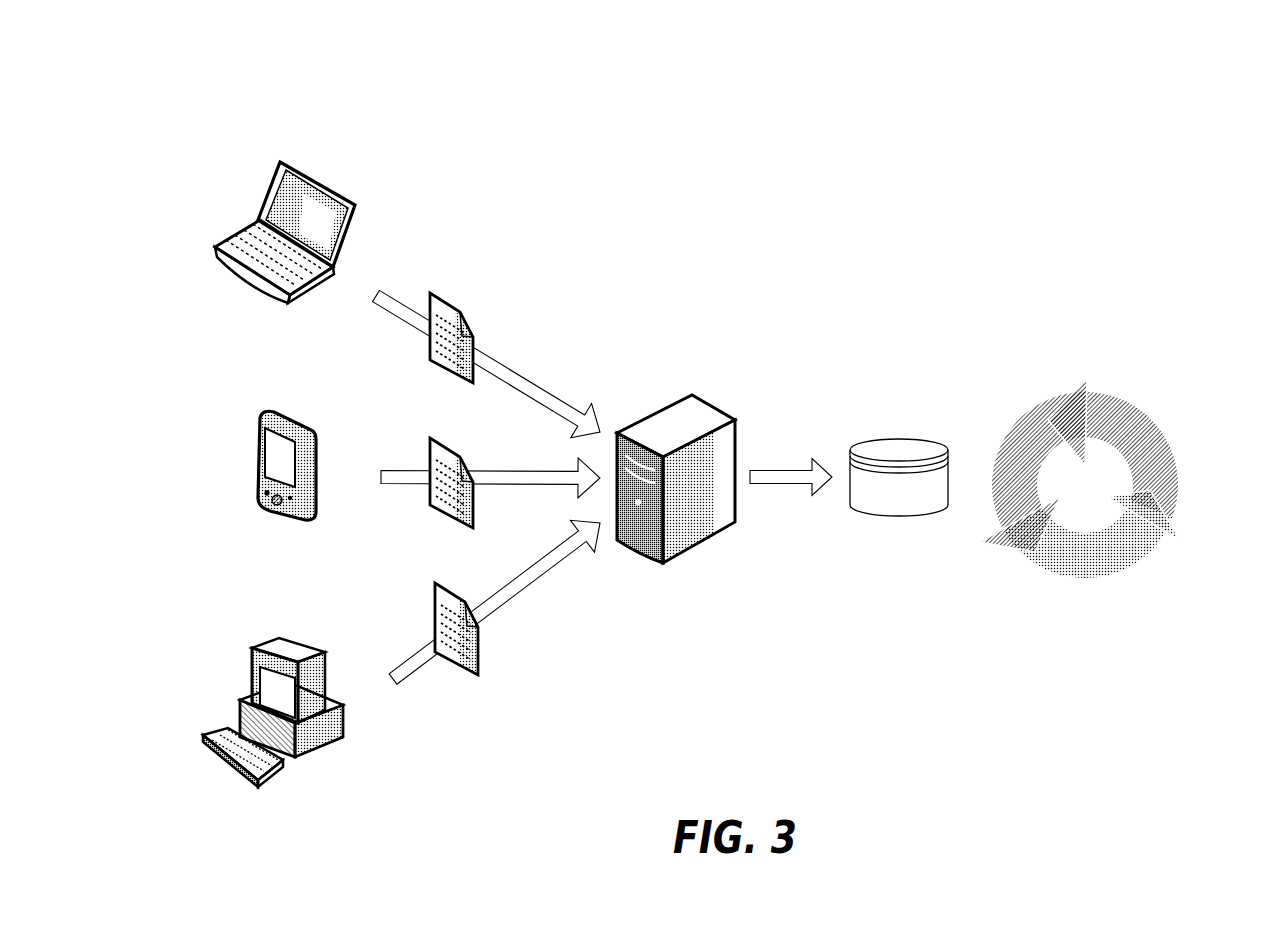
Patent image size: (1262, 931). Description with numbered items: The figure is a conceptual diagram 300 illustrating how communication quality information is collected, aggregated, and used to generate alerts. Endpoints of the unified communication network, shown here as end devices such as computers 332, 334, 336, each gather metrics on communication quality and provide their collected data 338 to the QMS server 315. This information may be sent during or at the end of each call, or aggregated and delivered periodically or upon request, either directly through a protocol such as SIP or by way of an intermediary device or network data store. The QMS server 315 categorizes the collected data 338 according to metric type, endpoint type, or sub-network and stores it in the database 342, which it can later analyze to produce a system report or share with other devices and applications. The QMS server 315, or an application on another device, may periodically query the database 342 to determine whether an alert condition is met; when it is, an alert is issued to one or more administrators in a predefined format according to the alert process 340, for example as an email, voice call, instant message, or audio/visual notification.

The conceptual diagram 300 is at (1095, 92).
The computer 332 is at (285, 155).
The computer 334 is at (282, 405).
The computer 336 is at (283, 637).
The collected data 338 is at (453, 280).
The QMS server 315 is at (677, 378).
The database 342 is at (895, 413).
The alert process 340 is at (1063, 378).